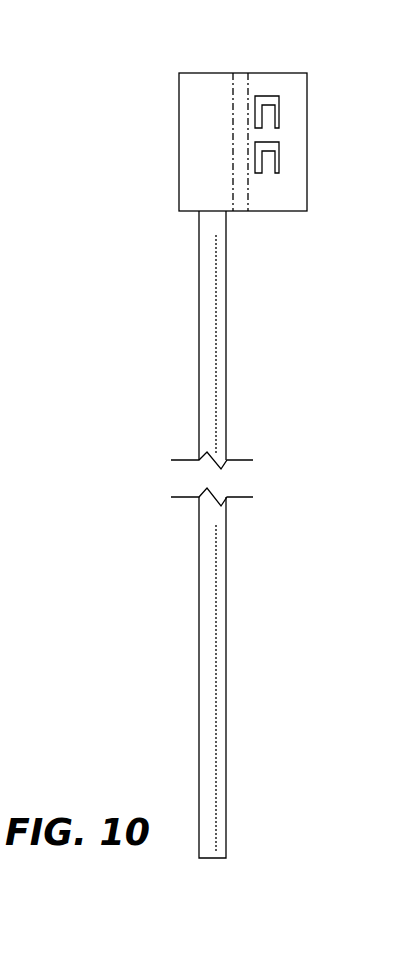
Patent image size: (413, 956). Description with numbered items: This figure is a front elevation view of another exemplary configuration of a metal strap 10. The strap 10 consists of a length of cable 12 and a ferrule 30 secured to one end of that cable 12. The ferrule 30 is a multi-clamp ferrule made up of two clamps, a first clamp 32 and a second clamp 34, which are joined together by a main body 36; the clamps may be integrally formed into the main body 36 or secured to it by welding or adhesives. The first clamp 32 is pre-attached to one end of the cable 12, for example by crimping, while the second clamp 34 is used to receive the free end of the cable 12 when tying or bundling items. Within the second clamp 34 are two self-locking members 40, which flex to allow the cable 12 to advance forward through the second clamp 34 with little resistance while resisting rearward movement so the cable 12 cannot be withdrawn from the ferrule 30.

The strap 10 is at (322, 358).
The cable 12 is at (188, 305).
The ferrule 30 is at (167, 110).
The first clamp 32 is at (192, 181).
The second clamp 34 is at (290, 192).
The main body 36 is at (243, 198).
The self-locking member 40 is at (265, 97).